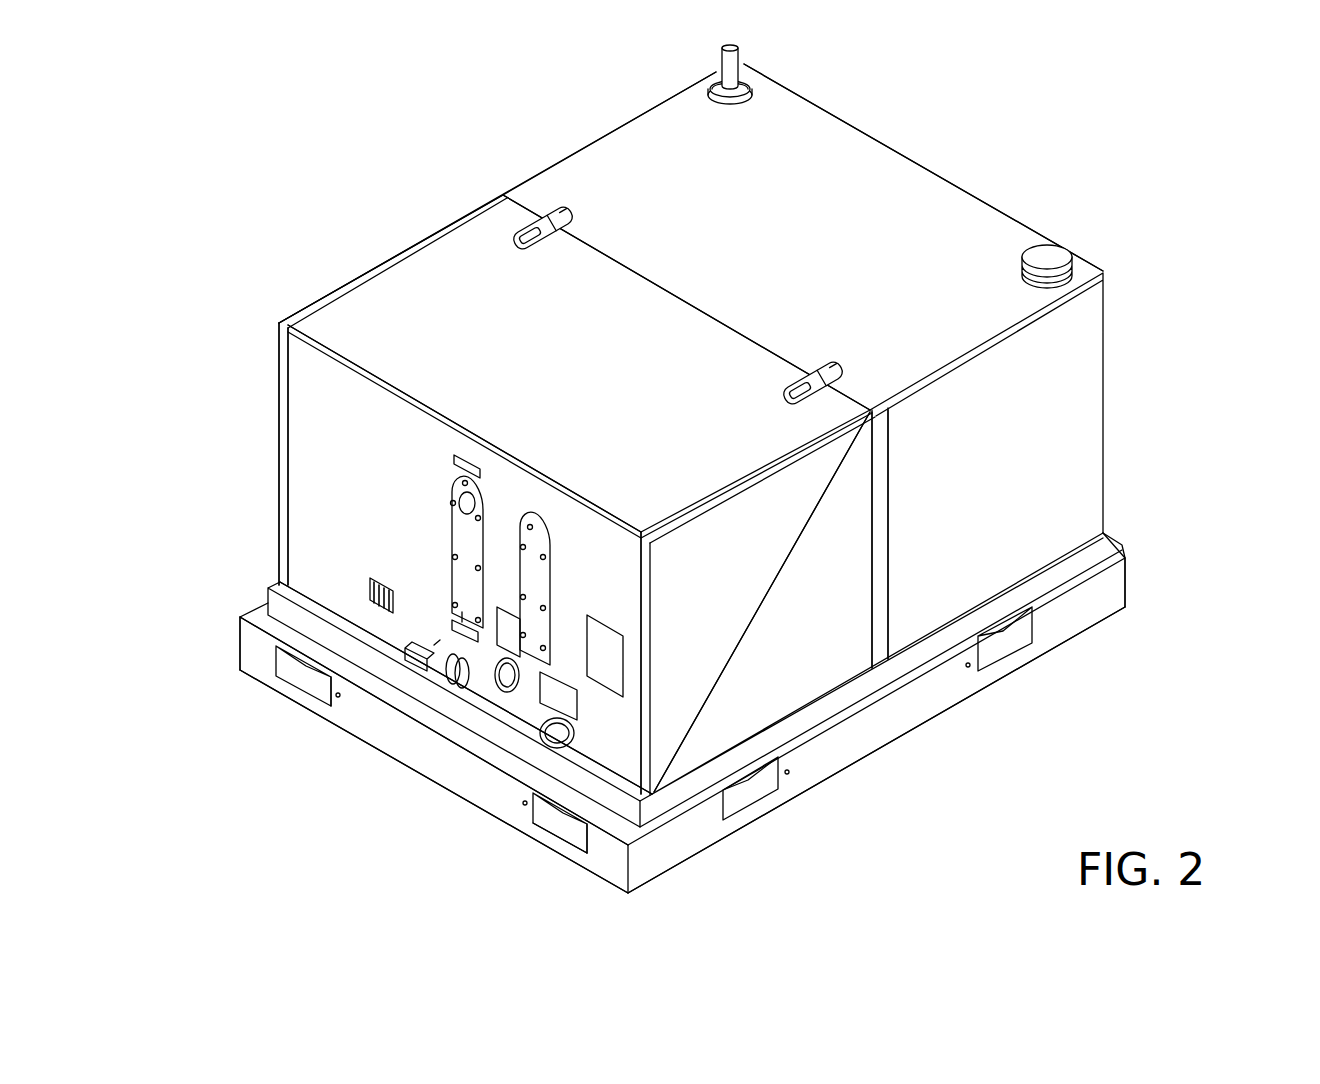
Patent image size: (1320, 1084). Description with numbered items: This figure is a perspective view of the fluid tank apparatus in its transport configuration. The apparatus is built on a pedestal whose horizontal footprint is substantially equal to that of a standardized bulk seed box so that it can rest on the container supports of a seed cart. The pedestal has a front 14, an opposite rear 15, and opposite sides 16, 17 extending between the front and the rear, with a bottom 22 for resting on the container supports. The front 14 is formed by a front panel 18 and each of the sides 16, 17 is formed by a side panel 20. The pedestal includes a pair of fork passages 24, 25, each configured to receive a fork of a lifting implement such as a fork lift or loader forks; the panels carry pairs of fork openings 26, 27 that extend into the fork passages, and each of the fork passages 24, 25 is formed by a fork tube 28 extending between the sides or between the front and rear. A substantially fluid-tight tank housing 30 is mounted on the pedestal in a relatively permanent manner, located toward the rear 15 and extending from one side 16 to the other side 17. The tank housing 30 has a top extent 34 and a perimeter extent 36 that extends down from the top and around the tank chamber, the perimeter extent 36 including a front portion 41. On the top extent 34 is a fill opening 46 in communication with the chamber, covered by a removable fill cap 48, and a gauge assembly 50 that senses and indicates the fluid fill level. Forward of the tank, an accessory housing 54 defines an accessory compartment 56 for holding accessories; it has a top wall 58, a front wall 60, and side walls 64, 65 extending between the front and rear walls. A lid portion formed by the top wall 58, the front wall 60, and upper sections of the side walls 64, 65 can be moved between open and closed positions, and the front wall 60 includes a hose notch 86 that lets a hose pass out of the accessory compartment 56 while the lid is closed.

The front 14 is at (392, 790).
The rear 15 is at (1145, 553).
The side 16 is at (240, 596).
The side 17 is at (697, 872).
The front panel 18 is at (483, 787).
The side panel 20 is at (837, 750).
The bottom 22 is at (933, 740).
The fork passage 24 is at (273, 716).
The fork passage 25 is at (538, 880).
The fork opening 26 is at (322, 690).
The fork opening 27 is at (600, 848).
The fork tube 28 is at (313, 678).
The tank housing 30 is at (997, 193).
The top extent 34 is at (881, 188).
The perimeter extent 36 is at (1072, 448).
The front portion 41 is at (870, 618).
The fill opening 46 is at (1082, 246).
The fill cap 48 is at (1045, 260).
The gauge assembly 50 is at (775, 67).
The accessory housing 54 is at (415, 292).
The accessory compartment 56 is at (678, 305).
The top wall 58 is at (360, 313).
The front wall 60 is at (328, 465).
The side wall 64 is at (260, 392).
The side wall 65 is at (886, 584).
The hose notch 86 is at (562, 740).